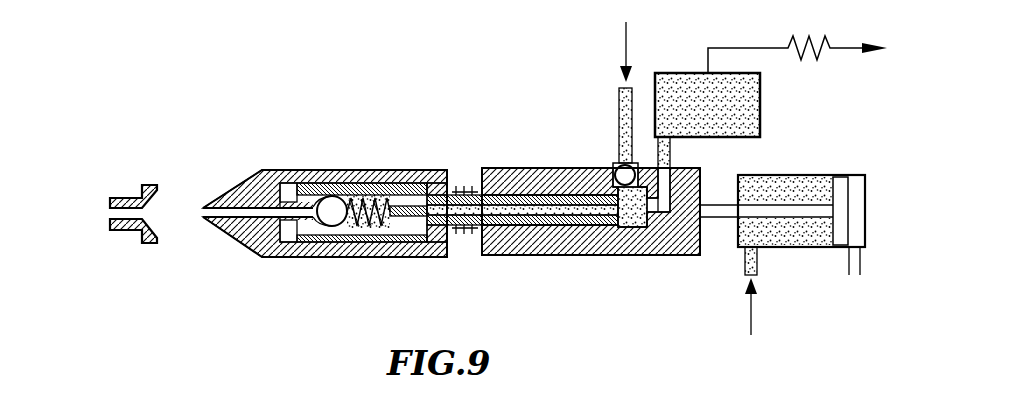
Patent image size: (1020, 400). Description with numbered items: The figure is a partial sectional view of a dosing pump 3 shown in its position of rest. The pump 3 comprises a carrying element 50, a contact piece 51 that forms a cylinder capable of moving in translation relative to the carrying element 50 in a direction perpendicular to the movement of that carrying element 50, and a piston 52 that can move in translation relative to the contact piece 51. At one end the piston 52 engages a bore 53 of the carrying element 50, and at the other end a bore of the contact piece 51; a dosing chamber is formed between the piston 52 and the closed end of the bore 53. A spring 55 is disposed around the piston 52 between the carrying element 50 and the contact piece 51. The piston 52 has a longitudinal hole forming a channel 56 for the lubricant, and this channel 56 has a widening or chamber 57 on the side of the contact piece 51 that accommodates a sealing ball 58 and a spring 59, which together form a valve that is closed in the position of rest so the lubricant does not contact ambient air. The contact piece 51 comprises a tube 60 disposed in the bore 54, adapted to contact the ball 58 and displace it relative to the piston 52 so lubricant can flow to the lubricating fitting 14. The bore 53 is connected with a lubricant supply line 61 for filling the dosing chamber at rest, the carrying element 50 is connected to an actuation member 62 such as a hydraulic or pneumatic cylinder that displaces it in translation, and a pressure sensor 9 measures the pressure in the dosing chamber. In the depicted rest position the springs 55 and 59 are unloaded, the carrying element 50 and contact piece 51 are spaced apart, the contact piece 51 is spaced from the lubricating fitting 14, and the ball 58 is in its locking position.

The pump 3 is at (198, 160).
The pressure sensor 9 is at (762, 105).
The lubricating fitting 14 is at (123, 197).
The carrying element 50 is at (587, 177).
The contact piece 51 is at (237, 193).
The piston 52 is at (433, 167).
The bore 53 is at (550, 170).
The bore 54 is at (288, 190).
The spring 55 is at (468, 193).
The channel 56 is at (512, 197).
The chamber 57 is at (397, 170).
The sealing ball 58 is at (337, 207).
The spring 59 is at (357, 168).
The tube 60 is at (250, 173).
The lubricant supply line 61 is at (620, 117).
The actuation member 62 is at (865, 222).